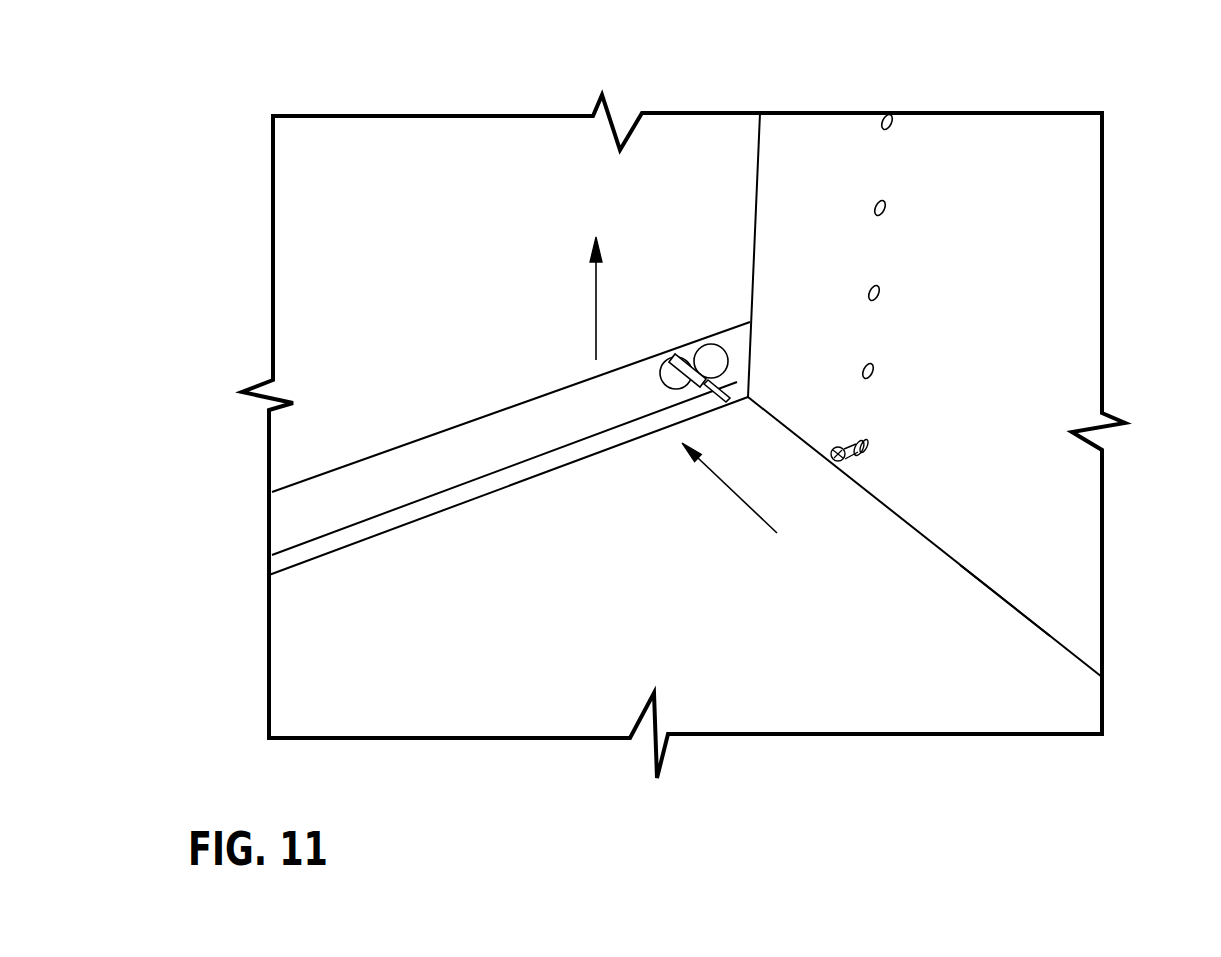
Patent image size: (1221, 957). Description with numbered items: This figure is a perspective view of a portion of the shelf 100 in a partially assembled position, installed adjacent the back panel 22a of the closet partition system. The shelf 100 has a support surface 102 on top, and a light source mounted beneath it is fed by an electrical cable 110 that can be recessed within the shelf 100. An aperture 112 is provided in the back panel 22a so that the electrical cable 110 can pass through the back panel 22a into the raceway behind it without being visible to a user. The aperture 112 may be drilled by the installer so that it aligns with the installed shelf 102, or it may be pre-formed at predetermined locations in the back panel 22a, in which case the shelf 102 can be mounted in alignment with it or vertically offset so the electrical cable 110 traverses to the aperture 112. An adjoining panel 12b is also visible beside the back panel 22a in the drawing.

The back panel 22a is at (418, 158).
The second panel 12b is at (1057, 178).
The aperture 112 is at (730, 345).
The electrical cable 110 is at (752, 378).
The support surface 102 is at (908, 592).
The shelf 100 is at (1015, 597).